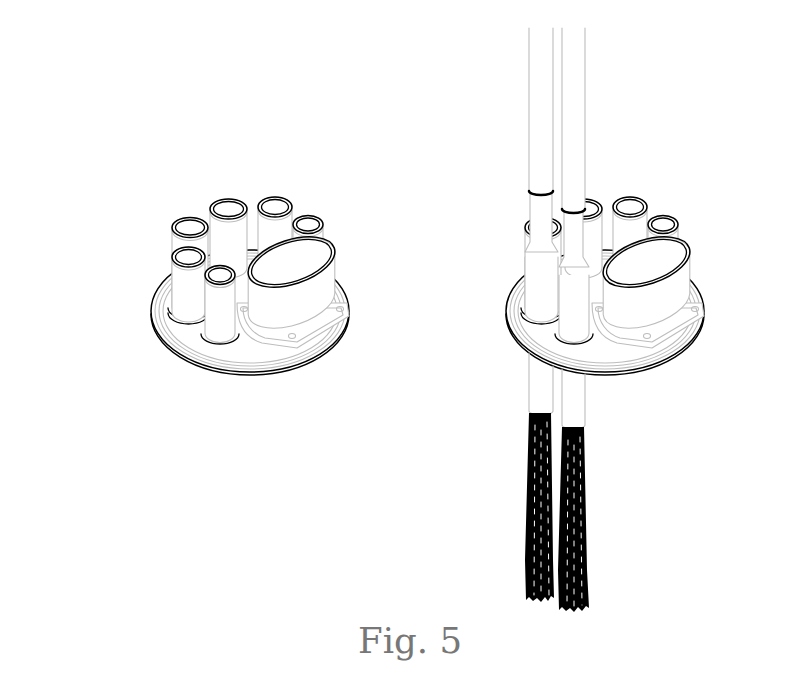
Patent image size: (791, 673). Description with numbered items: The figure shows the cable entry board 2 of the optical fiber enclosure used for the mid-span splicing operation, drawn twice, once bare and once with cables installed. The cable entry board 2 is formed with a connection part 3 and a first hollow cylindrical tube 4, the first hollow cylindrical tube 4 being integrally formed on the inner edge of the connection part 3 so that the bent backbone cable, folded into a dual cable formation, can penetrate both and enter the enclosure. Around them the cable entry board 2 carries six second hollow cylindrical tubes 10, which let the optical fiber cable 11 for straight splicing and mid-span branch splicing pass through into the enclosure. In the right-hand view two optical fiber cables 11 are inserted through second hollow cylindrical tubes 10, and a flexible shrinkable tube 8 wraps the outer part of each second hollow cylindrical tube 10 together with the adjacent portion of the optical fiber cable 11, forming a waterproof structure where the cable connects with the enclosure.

The cable entry board 2 is at (167, 348).
The connection part 3 is at (335, 323).
The first hollow cylindrical tube 4 is at (333, 258).
The flexible shrinkable tube 8 is at (530, 213).
The second hollow cylindrical tube 10 is at (322, 214).
The optical fiber cable 11 is at (530, 108).